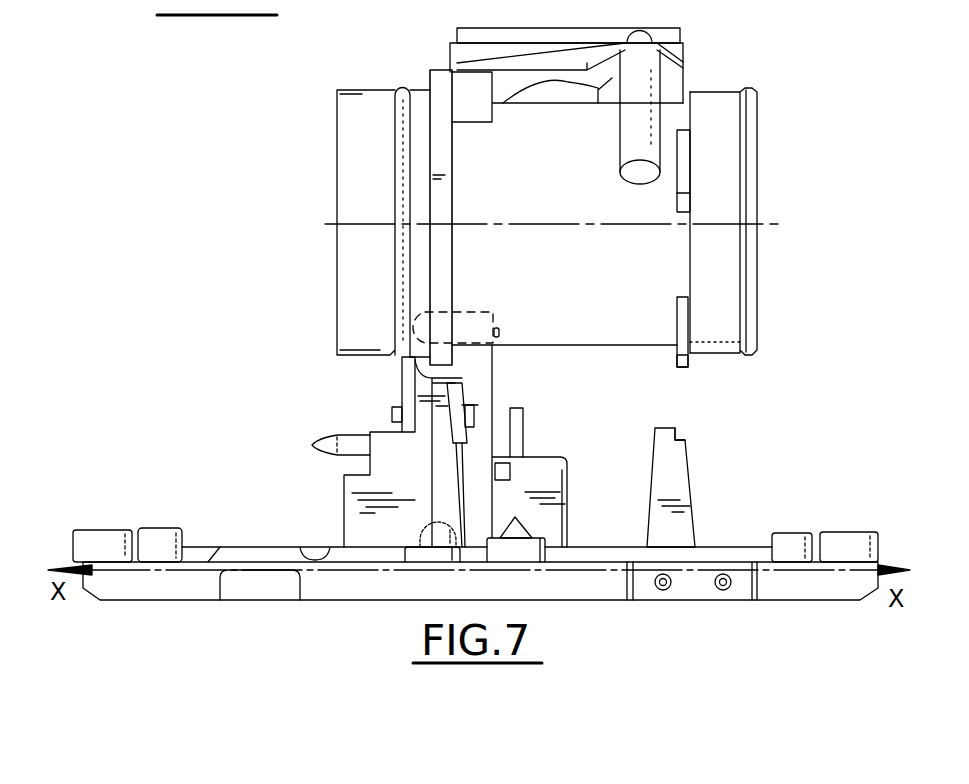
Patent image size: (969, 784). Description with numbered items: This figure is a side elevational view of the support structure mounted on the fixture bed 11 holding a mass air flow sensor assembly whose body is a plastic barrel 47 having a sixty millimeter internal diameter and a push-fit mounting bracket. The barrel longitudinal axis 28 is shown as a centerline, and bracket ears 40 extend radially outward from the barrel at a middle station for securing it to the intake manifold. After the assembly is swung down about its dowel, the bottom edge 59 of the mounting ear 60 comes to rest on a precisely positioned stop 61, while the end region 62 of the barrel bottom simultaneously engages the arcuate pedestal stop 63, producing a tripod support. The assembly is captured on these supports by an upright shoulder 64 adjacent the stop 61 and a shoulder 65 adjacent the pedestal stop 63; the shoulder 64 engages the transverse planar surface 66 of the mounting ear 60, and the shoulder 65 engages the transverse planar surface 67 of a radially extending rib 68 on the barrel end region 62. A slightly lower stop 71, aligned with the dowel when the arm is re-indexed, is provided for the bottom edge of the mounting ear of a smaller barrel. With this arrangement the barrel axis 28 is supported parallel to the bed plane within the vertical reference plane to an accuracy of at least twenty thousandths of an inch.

The fixture bed 11 is at (180, 590).
The barrel longitudinal axis 28 is at (770, 223).
The bracket ears 40 is at (684, 56).
The plastic barrel 47 is at (661, 24).
The bottom edge 59 is at (446, 199).
The mounting ear 60 is at (437, 128).
The stop 61 is at (462, 396).
The end region 62 is at (647, 333).
The arcuate pedestal stop 63 is at (663, 428).
The upright shoulder 64 is at (466, 378).
The shoulder 65 is at (679, 437).
The transverse planar surface 66 is at (432, 348).
The transverse planar surface 67 is at (672, 360).
The radially extending rib 68 is at (688, 350).
The stop 71 is at (428, 380).